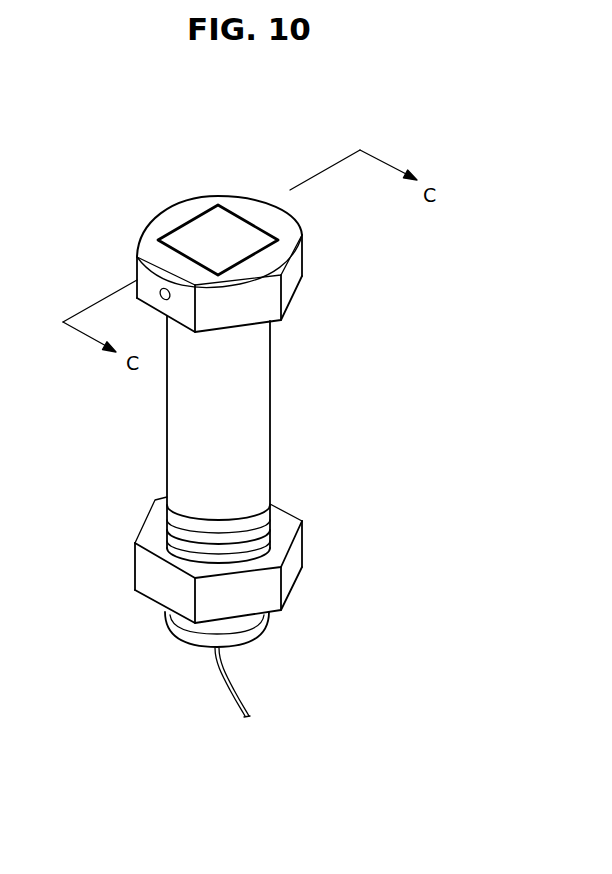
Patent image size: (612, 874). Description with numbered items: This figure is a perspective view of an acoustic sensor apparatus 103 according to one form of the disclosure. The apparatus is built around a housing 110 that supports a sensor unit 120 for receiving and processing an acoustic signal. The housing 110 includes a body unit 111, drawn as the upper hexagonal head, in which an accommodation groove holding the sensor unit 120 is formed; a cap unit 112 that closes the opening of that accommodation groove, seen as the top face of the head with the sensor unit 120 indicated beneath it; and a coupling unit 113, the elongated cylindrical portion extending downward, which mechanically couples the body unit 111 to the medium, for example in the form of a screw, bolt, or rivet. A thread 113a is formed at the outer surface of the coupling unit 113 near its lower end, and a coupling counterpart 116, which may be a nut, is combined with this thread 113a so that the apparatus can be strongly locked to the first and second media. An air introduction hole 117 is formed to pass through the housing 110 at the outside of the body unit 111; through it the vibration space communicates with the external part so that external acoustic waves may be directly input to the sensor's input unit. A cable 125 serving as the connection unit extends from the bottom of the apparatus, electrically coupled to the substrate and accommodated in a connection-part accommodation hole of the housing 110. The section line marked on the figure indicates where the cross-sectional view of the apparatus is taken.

The sensor assembly 103 is at (160, 132).
The housing 110 is at (290, 395).
The body unit 111 is at (283, 276).
The cap unit 112 is at (183, 225).
The coupling unit 113 is at (255, 448).
The thread 113a is at (255, 527).
The coupling counterpart 116 is at (263, 592).
The air introduction hole 117 is at (165, 301).
The sensor unit 120 is at (237, 216).
The cable 125 is at (237, 681).